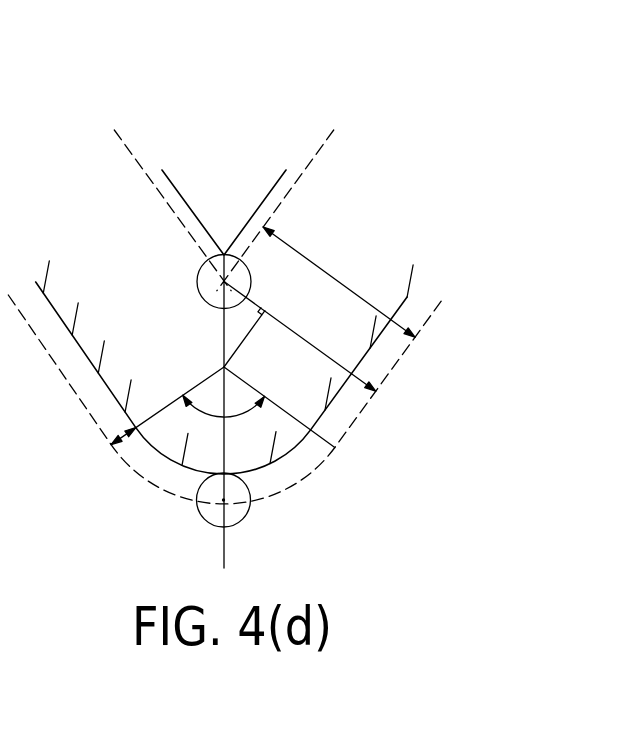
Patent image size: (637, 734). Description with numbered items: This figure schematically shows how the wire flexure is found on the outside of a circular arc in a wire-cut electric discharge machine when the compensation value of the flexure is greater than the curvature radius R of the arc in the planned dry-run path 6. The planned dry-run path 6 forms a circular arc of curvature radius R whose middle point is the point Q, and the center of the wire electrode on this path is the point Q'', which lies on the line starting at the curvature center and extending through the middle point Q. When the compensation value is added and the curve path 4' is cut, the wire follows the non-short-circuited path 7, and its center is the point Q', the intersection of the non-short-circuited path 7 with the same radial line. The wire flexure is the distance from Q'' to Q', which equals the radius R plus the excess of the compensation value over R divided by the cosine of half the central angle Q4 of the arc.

The curve path 4' is at (224, 187).
The non-short-circuited path 7 is at (320, 147).
The planned dry-run path 6 is at (373, 392).
The middle point of the circular arc Q is at (189, 496).
The center of the wire electrode on the non-short-circuited path Q' is at (201, 298).
The center of the wire electrode on the planned dry-run path Q'' is at (275, 536).
The curvature radius R is at (171, 436).
The central angle of the circular arc Q4 is at (223, 412).